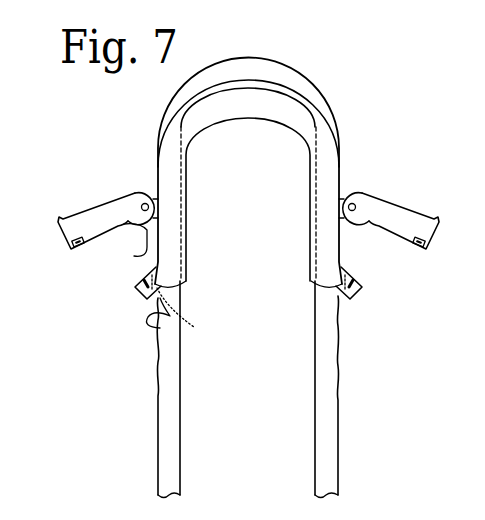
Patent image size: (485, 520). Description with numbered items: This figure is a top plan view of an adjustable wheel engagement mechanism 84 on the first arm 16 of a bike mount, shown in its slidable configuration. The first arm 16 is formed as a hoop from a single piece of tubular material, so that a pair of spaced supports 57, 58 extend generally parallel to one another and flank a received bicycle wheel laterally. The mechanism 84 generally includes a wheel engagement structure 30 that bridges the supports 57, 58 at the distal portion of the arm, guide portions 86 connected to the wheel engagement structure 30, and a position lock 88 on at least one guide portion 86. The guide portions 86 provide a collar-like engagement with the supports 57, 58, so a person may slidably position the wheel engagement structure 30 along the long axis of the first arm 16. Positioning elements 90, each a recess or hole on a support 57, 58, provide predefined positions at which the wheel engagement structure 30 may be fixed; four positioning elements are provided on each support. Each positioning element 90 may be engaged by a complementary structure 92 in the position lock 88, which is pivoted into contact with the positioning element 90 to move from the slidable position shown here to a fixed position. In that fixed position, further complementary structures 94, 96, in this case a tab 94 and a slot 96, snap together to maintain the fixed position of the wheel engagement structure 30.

The first arm 16 is at (97, 122).
The wheel engagement structure 30 is at (254, 112).
The support 57 is at (328, 441).
The support 58 is at (166, 461).
The adjustable wheel engagement mechanism 84 is at (92, 184).
The guide portion 86 is at (173, 239).
The position lock 88 is at (56, 300).
The positioning element 90 is at (160, 328).
The complementary structure 92 is at (134, 256).
The tab 94 is at (80, 248).
The slot 96 is at (133, 286).